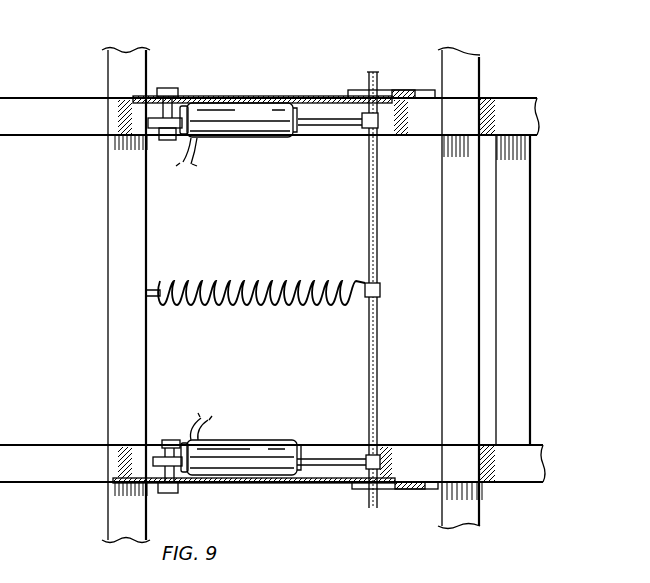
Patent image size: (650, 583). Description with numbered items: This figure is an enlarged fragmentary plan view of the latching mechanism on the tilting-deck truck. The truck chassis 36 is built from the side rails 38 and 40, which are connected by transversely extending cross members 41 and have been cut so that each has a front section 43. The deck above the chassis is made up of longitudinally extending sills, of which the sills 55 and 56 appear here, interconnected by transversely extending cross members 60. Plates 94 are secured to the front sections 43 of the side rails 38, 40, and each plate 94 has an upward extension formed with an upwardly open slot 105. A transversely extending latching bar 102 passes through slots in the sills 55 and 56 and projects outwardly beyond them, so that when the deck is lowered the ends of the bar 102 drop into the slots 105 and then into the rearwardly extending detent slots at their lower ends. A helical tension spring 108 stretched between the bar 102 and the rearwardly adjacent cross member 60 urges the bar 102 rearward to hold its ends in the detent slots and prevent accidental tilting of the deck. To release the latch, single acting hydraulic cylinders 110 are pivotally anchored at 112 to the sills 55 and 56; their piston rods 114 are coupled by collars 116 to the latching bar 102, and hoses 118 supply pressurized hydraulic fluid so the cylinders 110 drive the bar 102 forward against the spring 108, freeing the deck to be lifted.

The chassis 36 is at (552, 480).
The side rail 38 is at (540, 456).
The side rail 40 is at (528, 112).
The cross member 41 is at (517, 272).
The front section 43 is at (500, 106).
The sill 55 is at (47, 460).
The sill 56 is at (40, 117).
The cross member 60 is at (125, 258).
The plate 94 is at (425, 92).
The latching bar 102 is at (375, 362).
The slot 105 is at (407, 91).
The helical tension spring 108 is at (255, 271).
The single acting hydraulic cylinder 110 is at (247, 125).
The pivotal anchorage 112 is at (147, 133).
The piston rod 114 is at (327, 130).
The collar 116 is at (378, 126).
The hose 118 is at (197, 163).